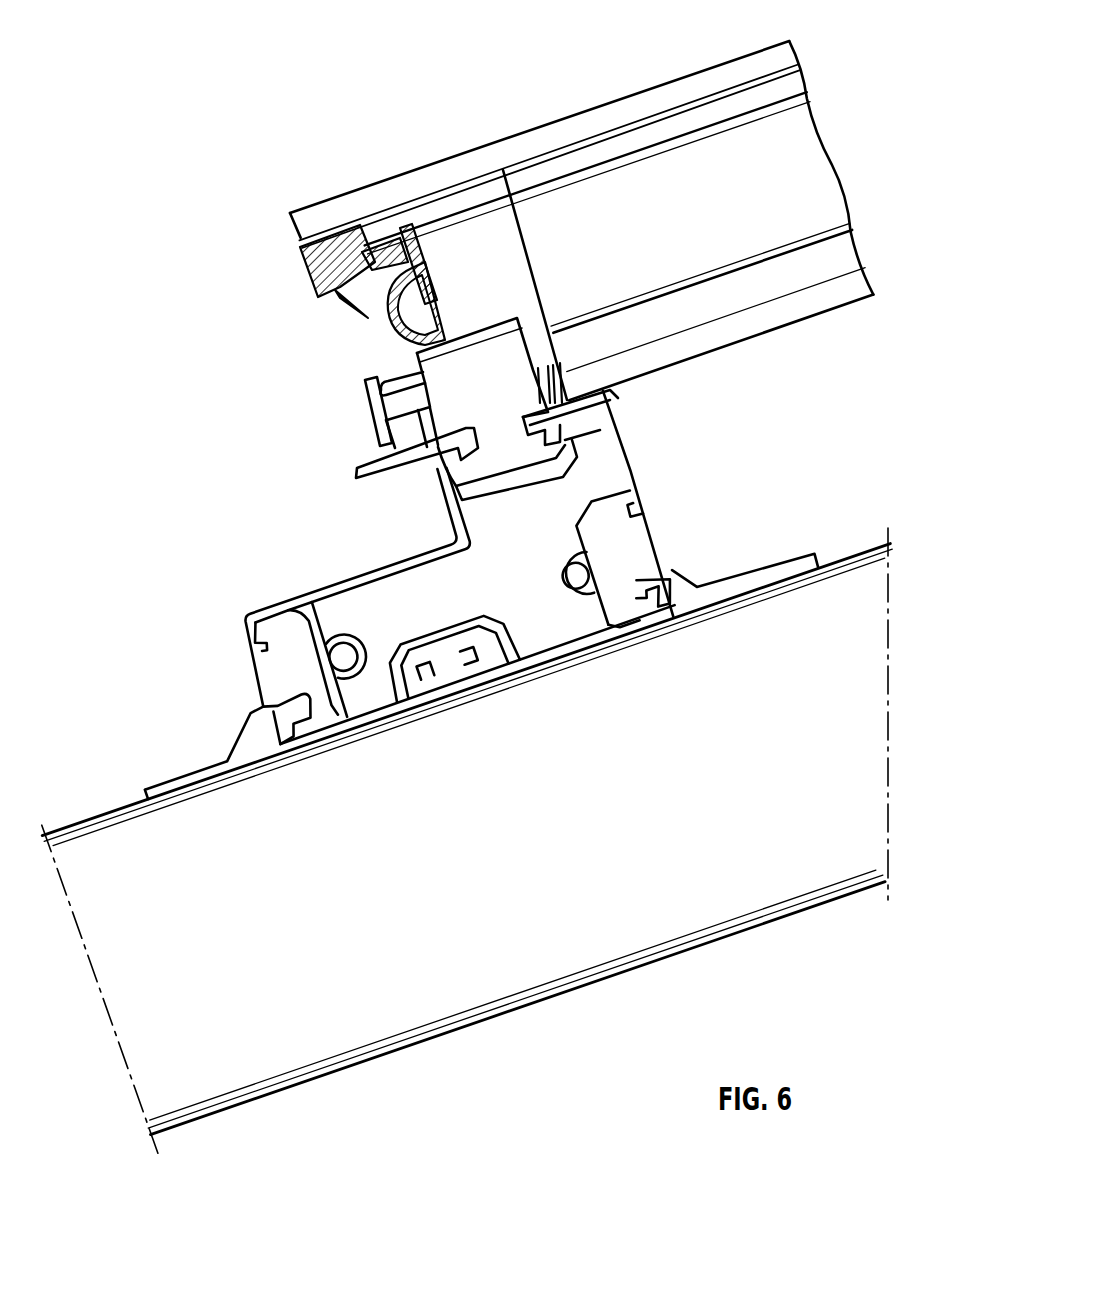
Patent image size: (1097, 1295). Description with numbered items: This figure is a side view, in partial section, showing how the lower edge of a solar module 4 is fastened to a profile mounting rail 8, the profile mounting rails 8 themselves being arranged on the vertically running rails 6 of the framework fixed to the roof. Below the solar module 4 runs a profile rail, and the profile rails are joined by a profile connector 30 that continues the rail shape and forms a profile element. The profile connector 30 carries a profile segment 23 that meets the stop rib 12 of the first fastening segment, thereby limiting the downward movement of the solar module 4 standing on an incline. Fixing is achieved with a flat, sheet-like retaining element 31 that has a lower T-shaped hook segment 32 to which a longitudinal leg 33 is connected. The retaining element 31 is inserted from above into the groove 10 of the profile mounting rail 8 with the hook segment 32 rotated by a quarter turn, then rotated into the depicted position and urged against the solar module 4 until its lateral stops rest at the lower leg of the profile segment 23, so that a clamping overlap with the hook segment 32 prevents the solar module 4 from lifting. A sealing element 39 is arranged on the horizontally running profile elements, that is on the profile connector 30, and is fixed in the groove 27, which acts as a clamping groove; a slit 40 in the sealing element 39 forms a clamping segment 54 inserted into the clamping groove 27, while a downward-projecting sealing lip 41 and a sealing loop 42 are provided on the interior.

The solar module 4 is at (580, 92).
The rail 6 is at (425, 1020).
The profile mounting rail 8 is at (273, 596).
The groove 10 is at (452, 487).
The stop rib 12 is at (368, 395).
The profile segment 23 is at (384, 437).
The groove 27 is at (418, 240).
The profile connector 30 is at (512, 237).
The retaining element 31 is at (540, 353).
The hook segment 32 is at (548, 440).
The longitudinal leg 33 is at (490, 372).
The sealing element 39 is at (338, 235).
The slit 40 is at (360, 240).
The sealing lip 41 is at (335, 293).
The sealing loop 42 is at (392, 325).
The clamping segment 54 is at (385, 245).